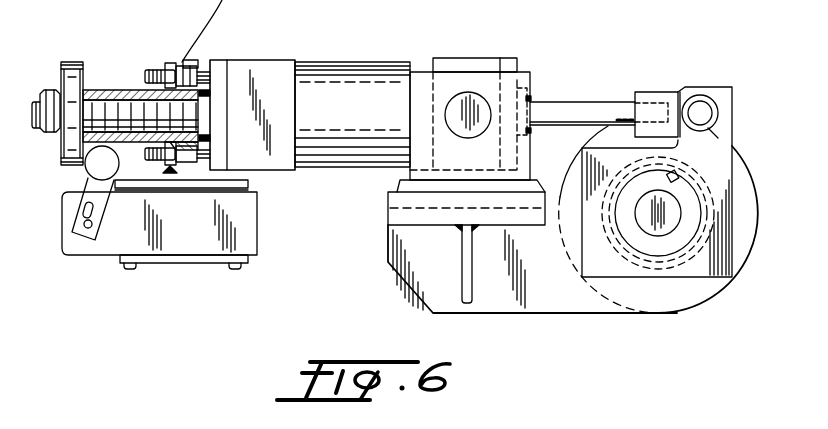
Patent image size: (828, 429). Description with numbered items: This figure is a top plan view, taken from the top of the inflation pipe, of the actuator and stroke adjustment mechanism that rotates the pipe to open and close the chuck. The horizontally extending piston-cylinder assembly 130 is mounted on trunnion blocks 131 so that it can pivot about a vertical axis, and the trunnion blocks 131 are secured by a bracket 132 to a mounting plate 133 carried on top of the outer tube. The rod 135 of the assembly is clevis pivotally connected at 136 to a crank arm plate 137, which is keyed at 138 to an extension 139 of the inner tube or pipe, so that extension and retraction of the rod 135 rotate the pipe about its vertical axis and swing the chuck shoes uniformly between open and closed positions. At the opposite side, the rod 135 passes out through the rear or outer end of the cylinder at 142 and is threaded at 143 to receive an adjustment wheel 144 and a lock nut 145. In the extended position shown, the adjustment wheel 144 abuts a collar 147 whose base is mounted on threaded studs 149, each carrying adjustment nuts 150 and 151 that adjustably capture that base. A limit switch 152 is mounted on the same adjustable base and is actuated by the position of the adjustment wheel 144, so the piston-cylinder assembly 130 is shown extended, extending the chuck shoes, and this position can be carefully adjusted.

The piston-cylinder assembly 130 is at (340, 62).
The trunnion blocks 131 is at (528, 72).
The bracket 132 is at (413, 218).
The mounting plate 133 is at (497, 297).
The rod 135 is at (577, 105).
The clevis pivot connection 136 is at (710, 113).
The crank arm plate 137 is at (720, 150).
The key 138 is at (690, 184).
The extension 139 is at (693, 215).
The rear end of cylinder 142 is at (193, 112).
The threaded portion of rod 143 is at (120, 110).
The adjustment wheel 144 is at (76, 62).
The lock nut 145 is at (40, 135).
The collar 147 is at (130, 90).
The threaded studs 149 is at (153, 66).
The adjustment nut 150 is at (157, 175).
The adjustment nut 151 is at (190, 154).
The limit switch 152 is at (245, 220).